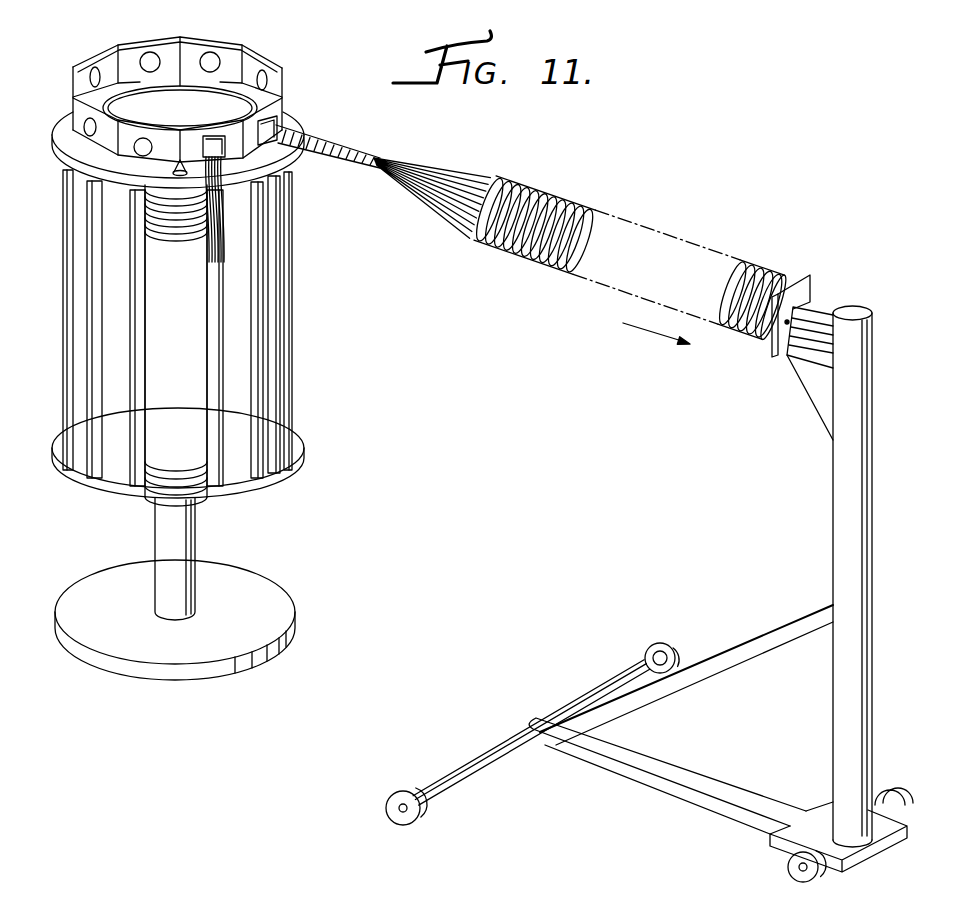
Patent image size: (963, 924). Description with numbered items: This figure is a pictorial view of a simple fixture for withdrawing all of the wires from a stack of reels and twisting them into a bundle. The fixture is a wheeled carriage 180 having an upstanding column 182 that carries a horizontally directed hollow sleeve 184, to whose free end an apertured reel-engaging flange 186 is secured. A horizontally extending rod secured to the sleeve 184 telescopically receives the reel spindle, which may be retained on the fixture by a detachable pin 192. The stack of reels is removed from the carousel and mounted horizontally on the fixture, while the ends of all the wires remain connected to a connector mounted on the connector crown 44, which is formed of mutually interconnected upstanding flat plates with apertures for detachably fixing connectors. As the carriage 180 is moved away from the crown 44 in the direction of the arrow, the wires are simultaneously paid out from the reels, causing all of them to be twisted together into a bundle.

The connector crown 44 is at (245, 42).
The wheeled carriage 180 is at (649, 560).
The upstanding column 182 is at (842, 502).
The hollow sleeve 184 is at (822, 317).
The reel-engaging flange 186 is at (811, 278).
The detachable pin 192 is at (772, 347).